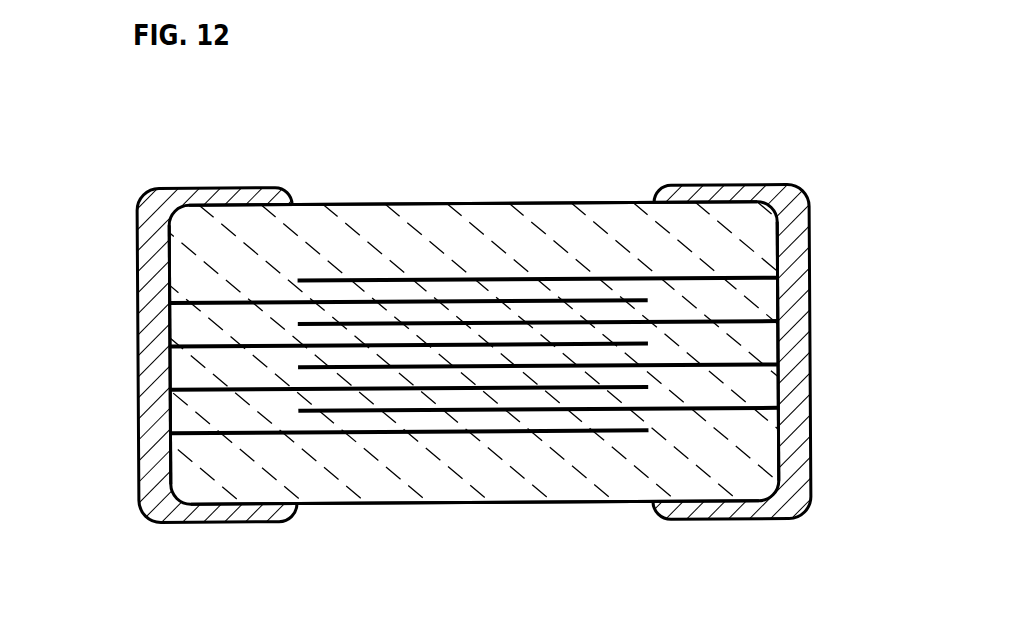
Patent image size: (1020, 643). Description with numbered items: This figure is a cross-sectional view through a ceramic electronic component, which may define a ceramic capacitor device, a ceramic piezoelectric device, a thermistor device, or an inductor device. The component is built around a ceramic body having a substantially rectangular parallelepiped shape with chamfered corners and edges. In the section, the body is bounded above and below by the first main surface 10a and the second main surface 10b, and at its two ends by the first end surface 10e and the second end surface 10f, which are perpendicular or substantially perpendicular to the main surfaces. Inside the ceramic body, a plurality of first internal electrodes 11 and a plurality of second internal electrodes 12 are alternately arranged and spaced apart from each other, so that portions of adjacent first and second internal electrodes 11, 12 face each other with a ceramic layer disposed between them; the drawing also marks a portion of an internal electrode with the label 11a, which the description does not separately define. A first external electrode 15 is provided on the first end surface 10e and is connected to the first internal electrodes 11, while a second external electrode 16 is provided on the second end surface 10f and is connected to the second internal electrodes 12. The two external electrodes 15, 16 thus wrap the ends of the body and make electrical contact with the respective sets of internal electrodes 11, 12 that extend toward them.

The first main surface 10a is at (473, 203).
The second main surface 10b is at (475, 502).
The first end surface 10e is at (170, 354).
The second end surface 10f is at (778, 351).
The first internal electrodes 11 is at (409, 366).
The second internal electrode 11a is at (538, 344).
The second internal electrodes 12 is at (510, 356).
The first external electrode 15 is at (345, 356).
The second external electrode 16 is at (679, 353).